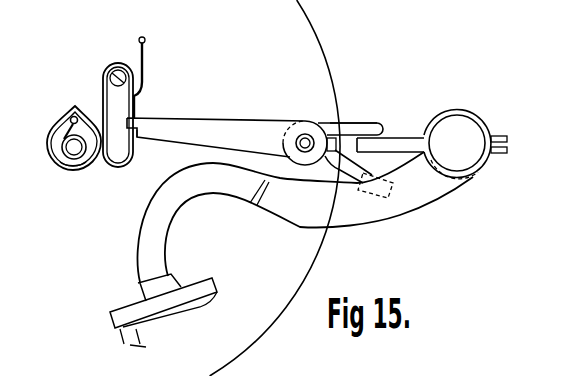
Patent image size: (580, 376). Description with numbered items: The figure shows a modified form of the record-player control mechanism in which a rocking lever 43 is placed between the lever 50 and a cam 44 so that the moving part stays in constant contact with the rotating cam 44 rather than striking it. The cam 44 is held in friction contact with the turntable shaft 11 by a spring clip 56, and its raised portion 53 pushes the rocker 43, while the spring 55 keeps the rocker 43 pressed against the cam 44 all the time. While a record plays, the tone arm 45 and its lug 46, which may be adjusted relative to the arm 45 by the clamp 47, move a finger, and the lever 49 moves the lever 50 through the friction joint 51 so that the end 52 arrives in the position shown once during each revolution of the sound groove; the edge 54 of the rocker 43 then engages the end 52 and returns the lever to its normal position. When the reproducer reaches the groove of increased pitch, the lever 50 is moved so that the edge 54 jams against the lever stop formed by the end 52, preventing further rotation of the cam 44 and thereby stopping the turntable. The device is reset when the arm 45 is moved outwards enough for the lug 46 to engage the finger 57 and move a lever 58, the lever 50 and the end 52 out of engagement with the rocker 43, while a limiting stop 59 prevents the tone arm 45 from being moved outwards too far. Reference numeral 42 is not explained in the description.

The turntable shaft 11 is at (70, 148).
The arm 42 is at (364, 124).
The rocking lever 43 is at (134, 108).
The cam 44 is at (63, 120).
The tone arm 45 is at (338, 217).
The lug 46 is at (398, 140).
The clamp 47 is at (508, 143).
The lever 49 is at (313, 119).
The lever 50 is at (213, 130).
The friction joint 51 is at (300, 137).
The end 52 is at (139, 135).
The raised portion 53 is at (75, 113).
The edge 54 is at (142, 145).
The spring 55 is at (144, 52).
The spring clip 56 is at (76, 158).
The finger 57 is at (323, 160).
The lever 58 is at (337, 144).
The limiting stop 59 is at (387, 195).